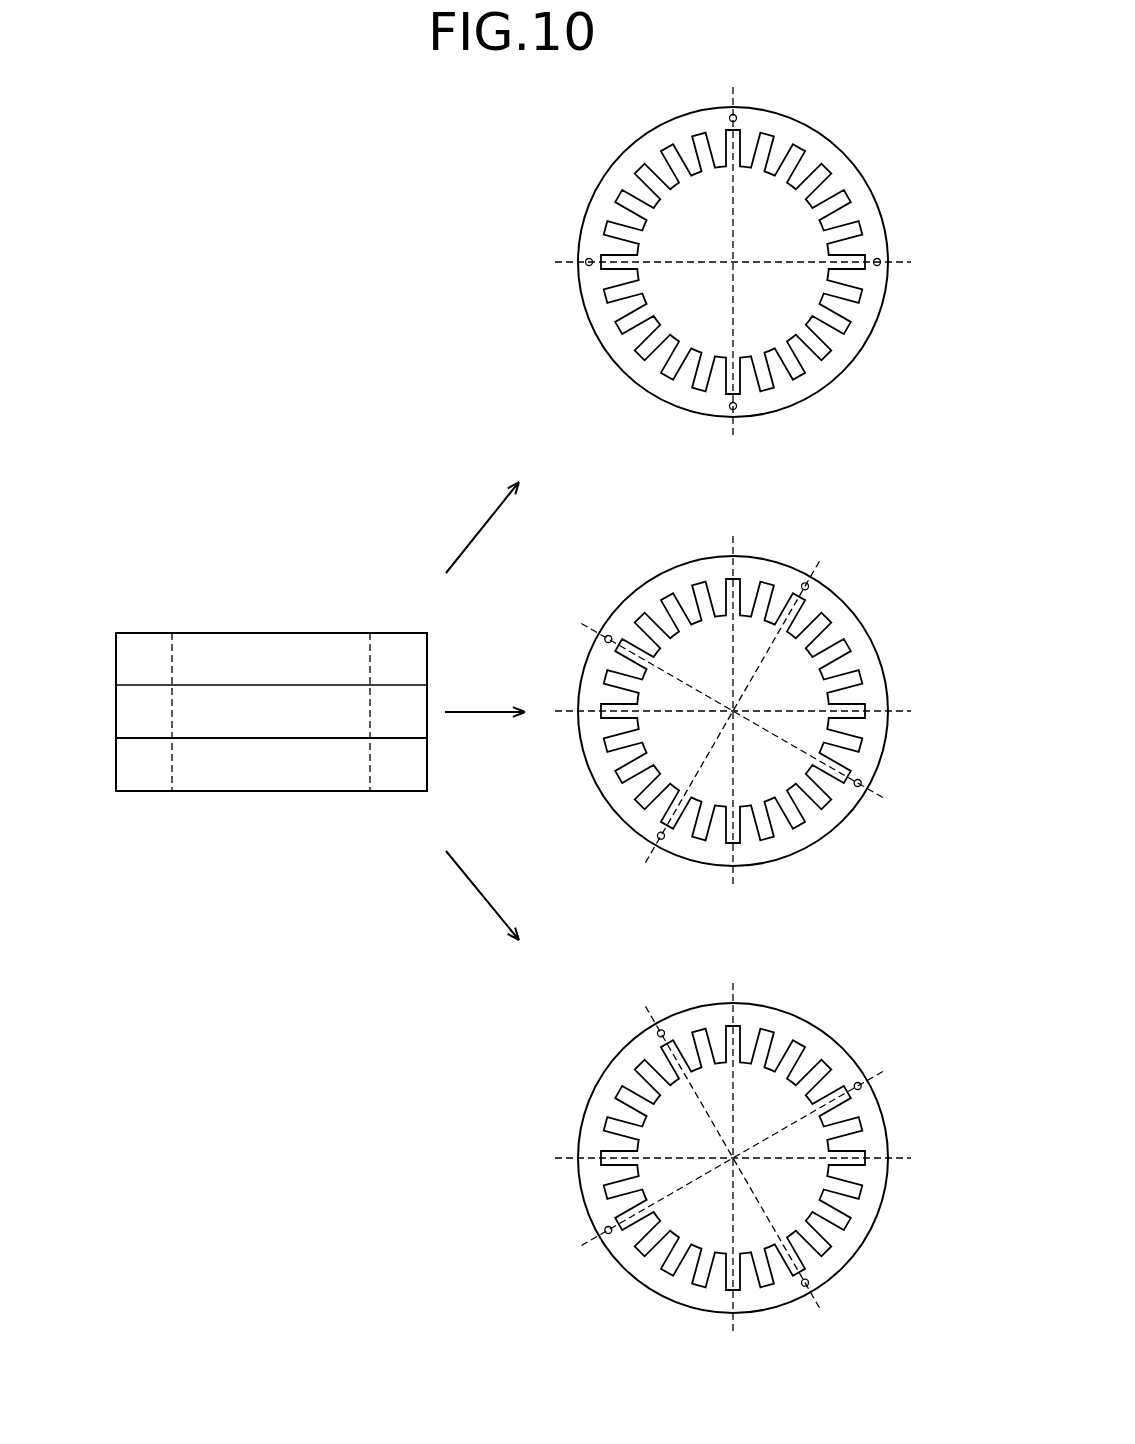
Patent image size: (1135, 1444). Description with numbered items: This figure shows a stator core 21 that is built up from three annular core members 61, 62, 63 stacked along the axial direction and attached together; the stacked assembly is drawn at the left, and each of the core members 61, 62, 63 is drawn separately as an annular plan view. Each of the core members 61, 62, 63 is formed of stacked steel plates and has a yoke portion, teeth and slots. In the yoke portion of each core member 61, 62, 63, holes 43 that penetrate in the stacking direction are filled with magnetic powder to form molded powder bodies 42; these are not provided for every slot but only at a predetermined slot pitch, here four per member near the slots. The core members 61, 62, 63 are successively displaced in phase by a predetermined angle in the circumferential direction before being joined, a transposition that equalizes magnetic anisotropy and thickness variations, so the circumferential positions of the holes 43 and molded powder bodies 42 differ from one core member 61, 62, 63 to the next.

The stator core 21 is at (123, 613).
The core member 61 is at (857, 172).
The core member 62 is at (860, 648).
The core member 63 is at (848, 1074).
The molded powder body 42 is at (721, 706).
The hole 43 is at (795, 1324).